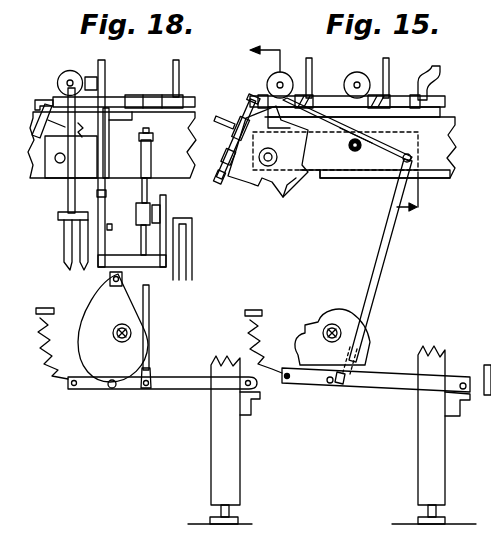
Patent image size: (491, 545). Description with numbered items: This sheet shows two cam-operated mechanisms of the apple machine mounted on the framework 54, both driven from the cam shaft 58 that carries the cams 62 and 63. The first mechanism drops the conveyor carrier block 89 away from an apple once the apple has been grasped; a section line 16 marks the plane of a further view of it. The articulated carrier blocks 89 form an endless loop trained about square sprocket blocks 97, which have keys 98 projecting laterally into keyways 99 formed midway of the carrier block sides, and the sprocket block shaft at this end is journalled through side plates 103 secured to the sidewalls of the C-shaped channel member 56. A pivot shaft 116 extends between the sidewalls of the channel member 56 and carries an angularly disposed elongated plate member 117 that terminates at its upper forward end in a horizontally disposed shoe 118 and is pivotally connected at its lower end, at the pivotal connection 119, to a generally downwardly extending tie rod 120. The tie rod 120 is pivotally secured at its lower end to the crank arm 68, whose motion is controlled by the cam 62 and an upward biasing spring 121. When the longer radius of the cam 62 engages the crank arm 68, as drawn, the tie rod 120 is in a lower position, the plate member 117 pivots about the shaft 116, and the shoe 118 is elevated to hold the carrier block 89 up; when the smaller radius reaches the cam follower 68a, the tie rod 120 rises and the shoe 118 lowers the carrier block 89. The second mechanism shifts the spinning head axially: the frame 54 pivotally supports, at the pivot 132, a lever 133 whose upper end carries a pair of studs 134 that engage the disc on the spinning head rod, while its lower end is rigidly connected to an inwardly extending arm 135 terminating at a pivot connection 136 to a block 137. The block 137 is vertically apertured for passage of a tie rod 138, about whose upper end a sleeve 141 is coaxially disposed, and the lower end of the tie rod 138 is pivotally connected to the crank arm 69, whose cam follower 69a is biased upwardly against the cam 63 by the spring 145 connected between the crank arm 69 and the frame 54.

In FIG. 15, the section line 16- 16 is at (348, 126).
In FIG. 18, the framework 54 is at (70, 261).
In FIG. 15, the framework 54 is at (265, 305).
In FIG. 15, the C-shaped channel member 56 is at (447, 125).
In FIG. 18, the cam shaft 58 is at (113, 333).
In FIG. 15, the cam shaft 58 is at (335, 323).
In FIG. 15, the cam 62 is at (322, 322).
In FIG. 18, the cam 63 is at (96, 299).
In FIG. 15, the crank arm 68 is at (376, 373).
In FIG. 15, the cam follower 68a is at (333, 388).
In FIG. 18, the crank arm 69 is at (172, 383).
In FIG. 18, the cam follower 69a is at (112, 391).
In FIG. 15, the carrier block 89 is at (313, 100).
In FIG. 15, the sprocket block 97 is at (293, 196).
In FIG. 15, the key 98 is at (252, 195).
In FIG. 15, the keyway 99 is at (240, 143).
In FIG. 15, the side plate 103 is at (380, 137).
In FIG. 15, the pivot shaft 116 is at (350, 151).
In FIG. 15, the elongated plate member 117 is at (378, 152).
In FIG. 15, the shoe 118 is at (295, 105).
In FIG. 15, the pivotal connection 119 is at (412, 157).
In FIG. 15, the tie rod 120 is at (382, 240).
In FIG. 15, the upward biasing spring 121 is at (271, 341).
In FIG. 18, the pivot 132 is at (112, 230).
In FIG. 18, the lever 133 is at (106, 193).
In FIG. 18, the stud 134 is at (105, 80).
In FIG. 18, the arm 135 is at (163, 258).
In FIG. 18, the pivot connection 136 is at (160, 212).
In FIG. 18, the block 137 is at (136, 213).
In FIG. 18, the tie rod 138 is at (149, 318).
In FIG. 18, the sleeve 141 is at (151, 160).
In FIG. 18, the spring 145 is at (47, 348).